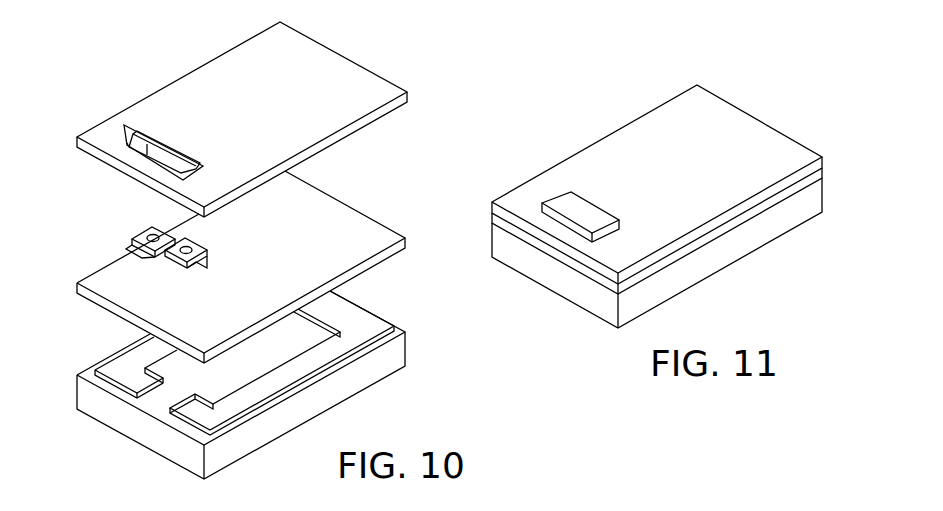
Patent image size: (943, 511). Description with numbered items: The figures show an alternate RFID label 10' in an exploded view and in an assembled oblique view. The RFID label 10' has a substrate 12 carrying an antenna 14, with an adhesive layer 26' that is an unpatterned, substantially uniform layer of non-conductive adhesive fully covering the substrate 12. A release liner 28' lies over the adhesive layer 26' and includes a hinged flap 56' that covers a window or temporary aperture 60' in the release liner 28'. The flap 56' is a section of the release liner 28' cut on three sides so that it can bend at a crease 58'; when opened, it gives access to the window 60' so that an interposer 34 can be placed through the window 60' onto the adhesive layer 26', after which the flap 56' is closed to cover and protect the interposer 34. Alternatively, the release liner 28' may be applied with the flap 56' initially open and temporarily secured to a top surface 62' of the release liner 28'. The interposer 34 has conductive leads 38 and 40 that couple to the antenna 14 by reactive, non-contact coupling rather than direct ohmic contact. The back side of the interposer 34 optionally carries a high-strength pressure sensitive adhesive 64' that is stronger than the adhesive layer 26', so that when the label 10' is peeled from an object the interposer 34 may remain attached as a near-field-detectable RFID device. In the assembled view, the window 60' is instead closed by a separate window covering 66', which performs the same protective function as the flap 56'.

In FIG. 10, the RFID label 10' is at (69, 47).
In FIG. 11, the RFID label 10' is at (497, 130).
In FIG. 10, the substrate 12 is at (392, 357).
In FIG. 11, the substrate 12 is at (813, 200).
In FIG. 10, the antenna 14 is at (360, 323).
In FIG. 10, the adhesive layer 26' is at (241, 258).
In FIG. 11, the adhesive layer 26' is at (668, 196).
In FIG. 10, the release liner 28' is at (262, 119).
In FIG. 11, the release liner 28' is at (662, 166).
In FIG. 10, the interposer 34 is at (142, 240).
In FIG. 10, the conductive lead 38 is at (138, 232).
In FIG. 10, the conductive lead 40 is at (200, 251).
In FIG. 10, the hinged flap 56' is at (163, 112).
In FIG. 10, the crease 58' is at (198, 134).
In FIG. 10, the window 60' is at (74, 116).
In FIG. 10, the top surface 62' is at (220, 76).
In FIG. 10, the high-strength pressure sensitive adhesive 64' is at (147, 269).
In FIG. 11, the window covering 66' is at (580, 172).